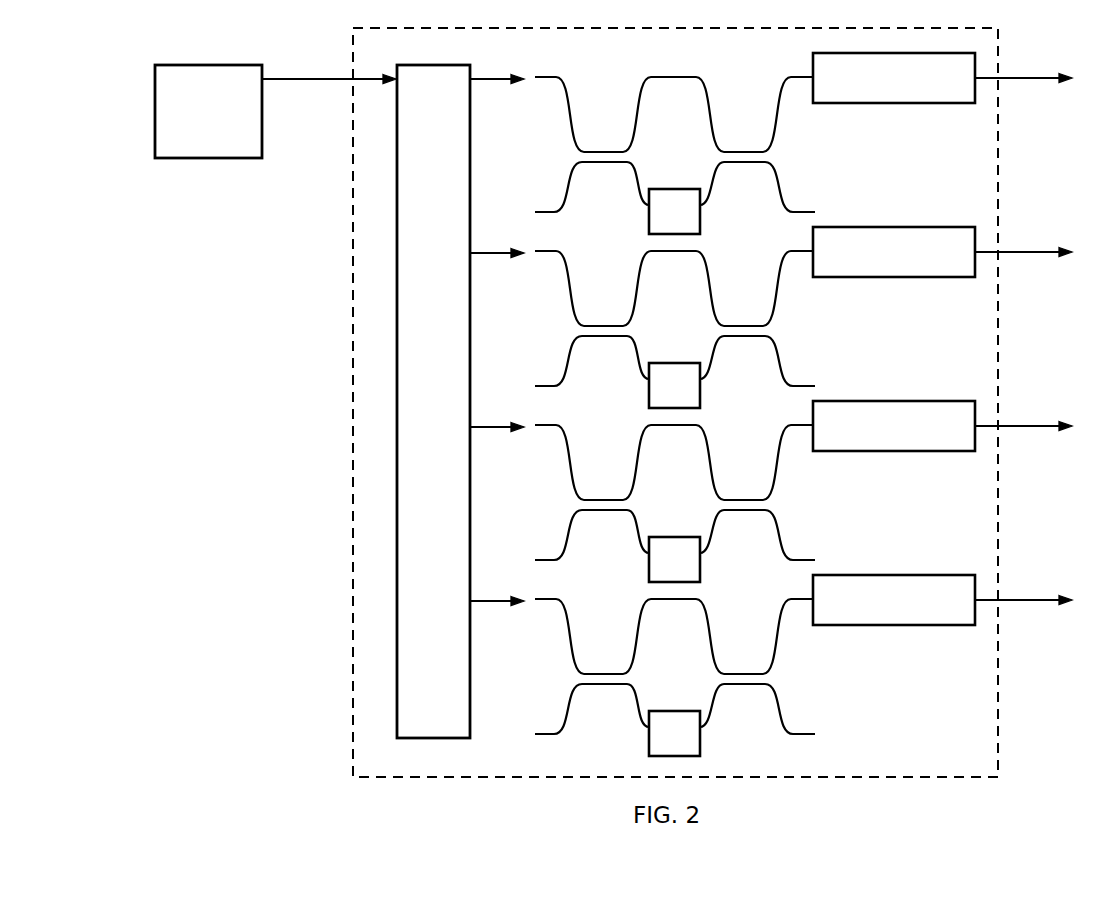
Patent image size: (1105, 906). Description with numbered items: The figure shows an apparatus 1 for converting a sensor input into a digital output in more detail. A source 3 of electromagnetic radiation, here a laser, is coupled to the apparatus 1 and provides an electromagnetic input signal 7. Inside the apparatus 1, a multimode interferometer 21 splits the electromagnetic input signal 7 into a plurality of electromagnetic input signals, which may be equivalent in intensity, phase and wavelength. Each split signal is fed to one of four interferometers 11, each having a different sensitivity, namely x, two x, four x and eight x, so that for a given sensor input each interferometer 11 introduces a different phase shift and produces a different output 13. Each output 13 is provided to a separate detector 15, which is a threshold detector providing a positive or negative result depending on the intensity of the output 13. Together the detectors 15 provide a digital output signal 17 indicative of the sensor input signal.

The apparatus 1 is at (350, 466).
The source of electromagnetic radiation 3 is at (210, 158).
The electromagnetic input signal 7 is at (324, 80).
The interferometer 11 is at (705, 107).
The output 13 is at (790, 375).
The detector 15 is at (894, 103).
The digital output signal 17 is at (1040, 349).
The multimode interferometer 21 is at (418, 303).